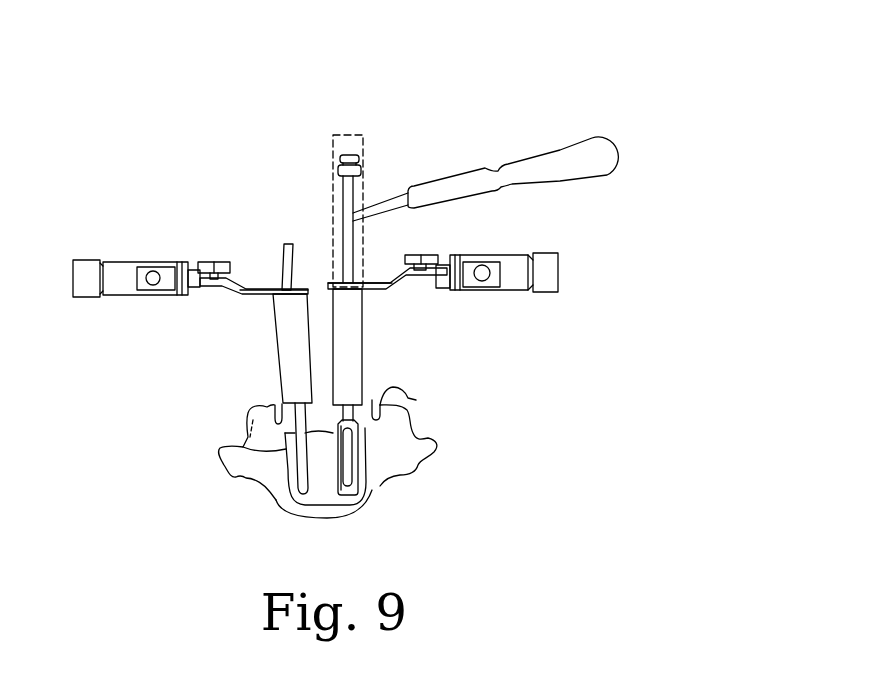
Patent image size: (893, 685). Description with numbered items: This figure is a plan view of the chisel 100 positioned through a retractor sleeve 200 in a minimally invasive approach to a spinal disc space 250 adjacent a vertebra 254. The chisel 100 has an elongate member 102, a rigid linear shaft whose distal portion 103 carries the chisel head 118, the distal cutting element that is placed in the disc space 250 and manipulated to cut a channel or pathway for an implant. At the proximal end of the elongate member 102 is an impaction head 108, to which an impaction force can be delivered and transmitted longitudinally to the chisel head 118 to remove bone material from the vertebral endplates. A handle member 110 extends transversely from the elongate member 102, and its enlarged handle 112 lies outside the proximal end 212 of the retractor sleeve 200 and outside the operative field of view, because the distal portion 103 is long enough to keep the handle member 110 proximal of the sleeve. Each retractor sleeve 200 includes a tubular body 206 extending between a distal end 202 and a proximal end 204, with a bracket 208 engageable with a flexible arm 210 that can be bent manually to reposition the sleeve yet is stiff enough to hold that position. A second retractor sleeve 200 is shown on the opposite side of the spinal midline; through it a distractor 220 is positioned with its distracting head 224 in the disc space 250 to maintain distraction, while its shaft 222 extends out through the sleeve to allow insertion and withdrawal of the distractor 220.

The chisel 100 is at (328, 112).
The elongate member 102 is at (368, 232).
The distal portion 103 is at (341, 236).
The impaction head 108 is at (362, 160).
The handle member 110 is at (458, 140).
The handle 112 is at (530, 157).
The chisel head 118 is at (378, 460).
The retractor sleeve 200 is at (266, 341).
The distal end 202 is at (274, 297).
The proximal end 204 is at (280, 404).
The tubular body 206 is at (278, 358).
The bracket 208 is at (262, 289).
The flexible arm 210 is at (124, 262).
The proximal end 212 is at (363, 135).
The distractor 220 is at (272, 232).
The shaft 222 is at (293, 248).
The distracting head 224 is at (258, 479).
The spinal disc space 250 is at (288, 509).
The vertebra 254 is at (383, 486).